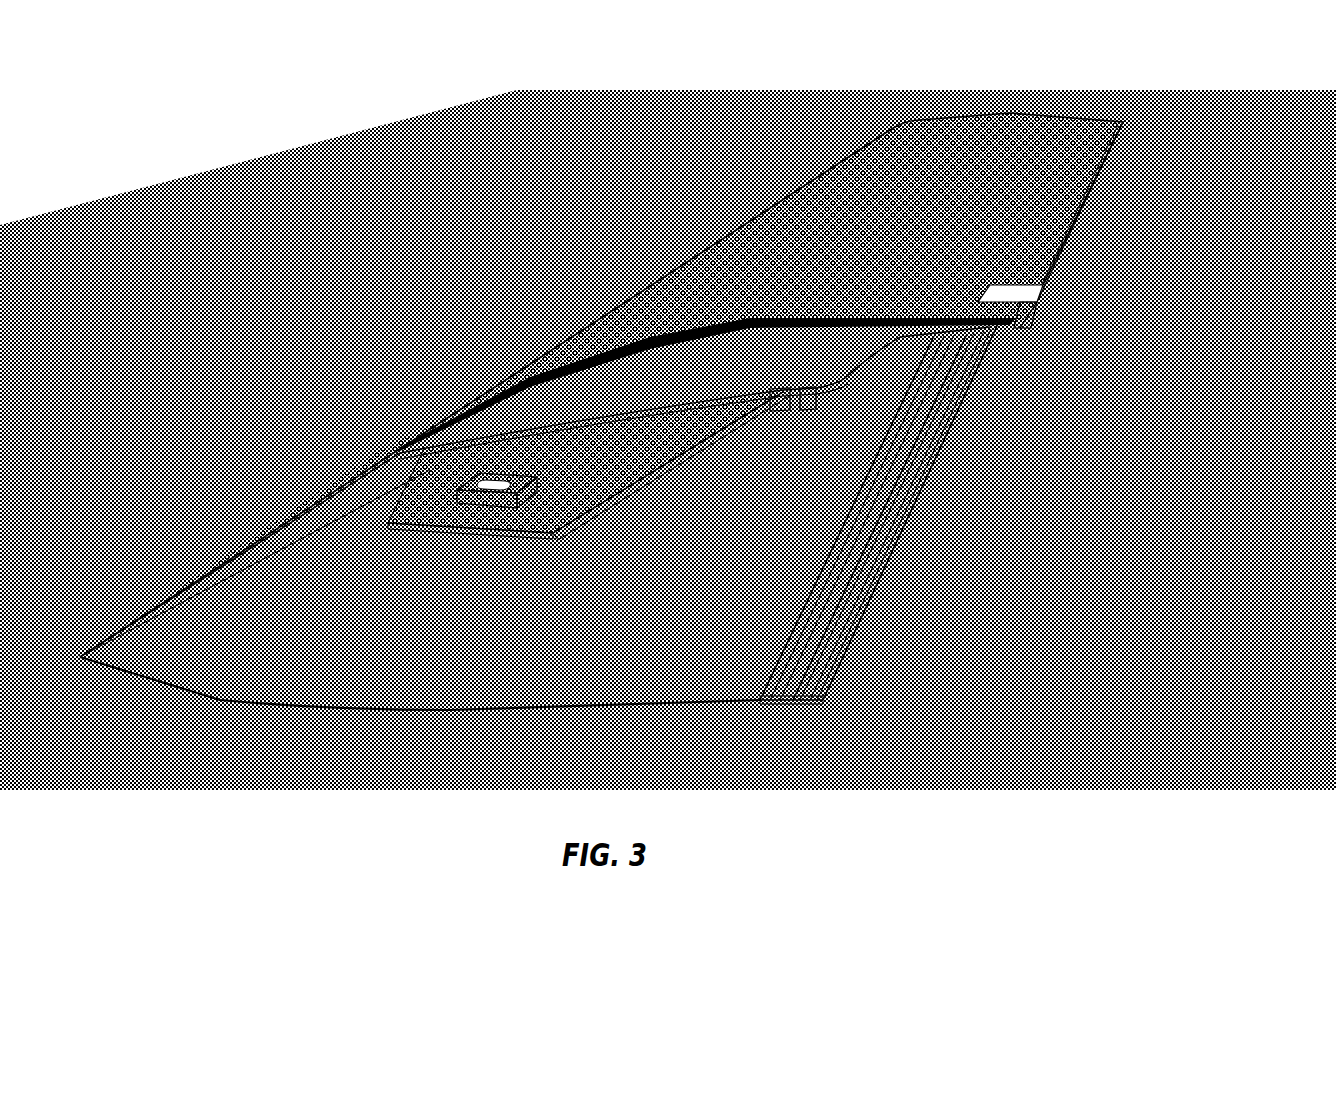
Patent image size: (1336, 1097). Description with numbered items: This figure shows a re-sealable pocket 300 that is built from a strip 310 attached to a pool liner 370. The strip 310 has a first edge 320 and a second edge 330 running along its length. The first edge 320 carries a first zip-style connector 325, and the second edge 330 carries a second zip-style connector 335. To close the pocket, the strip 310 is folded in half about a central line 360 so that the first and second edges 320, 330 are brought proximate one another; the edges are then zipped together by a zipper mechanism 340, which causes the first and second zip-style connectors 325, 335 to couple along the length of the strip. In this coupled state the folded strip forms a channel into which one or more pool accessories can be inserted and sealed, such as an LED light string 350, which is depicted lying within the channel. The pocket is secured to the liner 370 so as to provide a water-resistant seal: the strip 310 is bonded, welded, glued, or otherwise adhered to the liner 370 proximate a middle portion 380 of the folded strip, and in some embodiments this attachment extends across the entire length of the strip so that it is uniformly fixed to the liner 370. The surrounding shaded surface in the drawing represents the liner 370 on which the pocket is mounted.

The re-sealable pocket 300 is at (1100, 104).
The strip 310 is at (1007, 233).
The first edge 320 is at (930, 478).
The first zip-style connector 325 is at (795, 714).
The second edge 330 is at (858, 352).
The second zip-style connector 335 is at (784, 436).
The zipper mechanism 340 is at (990, 290).
The LED light string 350 is at (423, 513).
The central line 360 is at (137, 627).
The liner 370 is at (310, 233).
The middle portion 380 is at (303, 682).